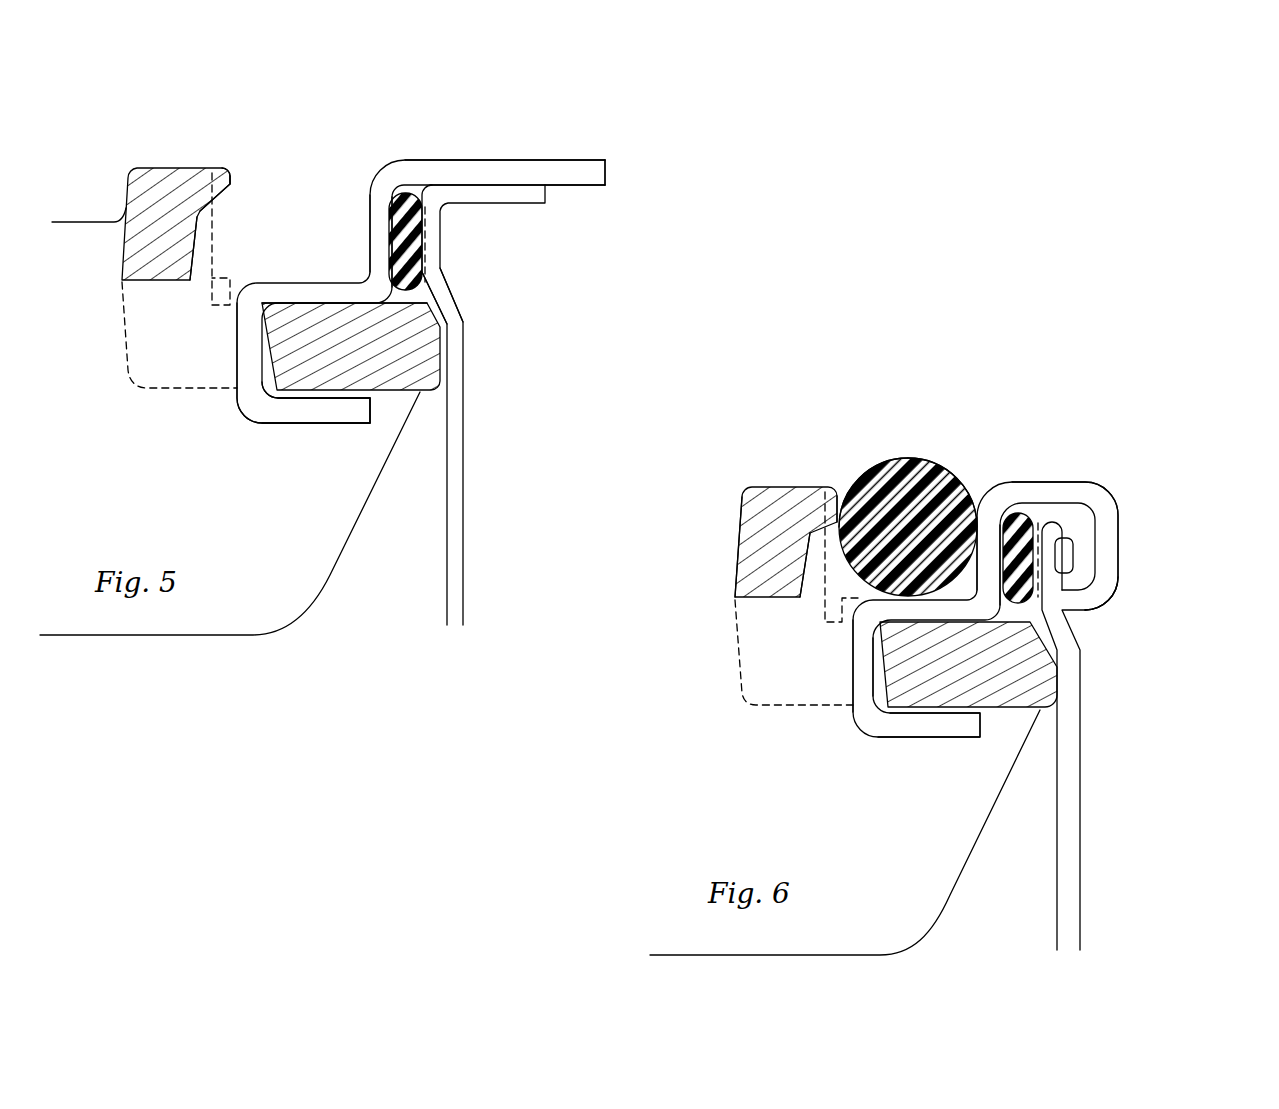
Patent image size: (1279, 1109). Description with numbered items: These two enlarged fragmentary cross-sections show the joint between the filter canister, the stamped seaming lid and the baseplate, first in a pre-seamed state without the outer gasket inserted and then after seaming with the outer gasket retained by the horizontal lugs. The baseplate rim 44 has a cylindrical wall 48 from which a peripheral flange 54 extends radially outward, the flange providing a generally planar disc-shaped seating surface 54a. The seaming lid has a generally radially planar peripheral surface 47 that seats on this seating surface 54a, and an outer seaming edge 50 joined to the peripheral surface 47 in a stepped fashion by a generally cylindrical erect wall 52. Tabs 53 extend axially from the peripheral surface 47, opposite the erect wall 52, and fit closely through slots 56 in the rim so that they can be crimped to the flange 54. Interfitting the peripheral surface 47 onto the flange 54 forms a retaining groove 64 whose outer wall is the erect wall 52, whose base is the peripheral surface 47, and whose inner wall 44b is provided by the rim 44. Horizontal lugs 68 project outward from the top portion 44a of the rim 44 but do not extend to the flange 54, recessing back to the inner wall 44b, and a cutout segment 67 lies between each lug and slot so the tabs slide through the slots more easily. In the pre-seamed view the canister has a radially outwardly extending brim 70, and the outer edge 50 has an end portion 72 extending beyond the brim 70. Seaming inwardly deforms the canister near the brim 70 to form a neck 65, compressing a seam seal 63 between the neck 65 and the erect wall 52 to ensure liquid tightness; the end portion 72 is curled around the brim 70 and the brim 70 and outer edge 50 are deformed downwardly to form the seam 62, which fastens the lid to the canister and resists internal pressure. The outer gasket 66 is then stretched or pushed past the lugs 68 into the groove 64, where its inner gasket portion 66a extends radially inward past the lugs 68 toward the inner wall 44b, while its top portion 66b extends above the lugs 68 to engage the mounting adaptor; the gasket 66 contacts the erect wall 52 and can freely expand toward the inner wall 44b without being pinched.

In FIG. 5, the rim 44 is at (122, 260).
In FIG. 6, the rim 44 is at (741, 530).
In FIG. 5, the top portion of the rim 44a is at (207, 168).
In FIG. 5, the inner wall 44b is at (244, 239).
In FIG. 5, the peripheral surface 47 is at (288, 292).
In FIG. 6, the peripheral surface 47 is at (864, 682).
In FIG. 6, the cylindrical wall 48 is at (735, 567).
In FIG. 5, the outer seaming edge 50 is at (451, 170).
In FIG. 6, the outer seaming edge 50 is at (1106, 600).
In FIG. 5, the erect wall 52 is at (378, 251).
In FIG. 6, the erect wall 52 is at (990, 530).
In FIG. 5, the tabs 53 is at (340, 410).
In FIG. 6, the tabs 53 is at (863, 652).
In FIG. 5, the peripheral flange 54 is at (418, 360).
In FIG. 6, the peripheral flange 54 is at (990, 667).
In FIG. 5, the seating surface 54a is at (348, 307).
In FIG. 5, the slots 56 is at (207, 393).
In FIG. 6, the seam 62 is at (1132, 518).
In FIG. 5, the seam seal 63 is at (413, 247).
In FIG. 6, the seam seal 63 is at (1014, 520).
In FIG. 5, the retaining groove 64 is at (308, 196).
In FIG. 6, the retaining groove 64 is at (930, 612).
In FIG. 5, the neck 65 is at (452, 290).
In FIG. 6, the outer gasket 66 is at (882, 472).
In FIG. 6, the inner gasket portion 66a is at (838, 530).
In FIG. 6, the top portion of the gasket 66b is at (933, 475).
In FIG. 5, the cutout segment 67 is at (194, 266).
In FIG. 6, the cutout segment 67 is at (810, 574).
In FIG. 5, the lugs 68 is at (228, 170).
In FIG. 6, the lugs 68 is at (836, 485).
In FIG. 5, the brim 70 is at (546, 194).
In FIG. 5, the end portion 72 is at (573, 168).
In FIG. 6, the end portion 72 is at (1067, 548).